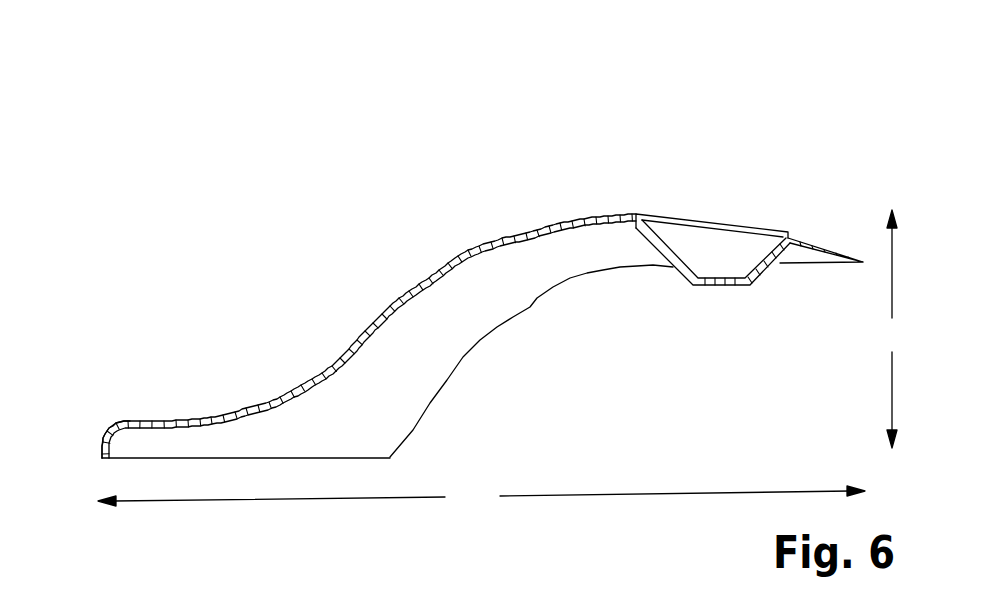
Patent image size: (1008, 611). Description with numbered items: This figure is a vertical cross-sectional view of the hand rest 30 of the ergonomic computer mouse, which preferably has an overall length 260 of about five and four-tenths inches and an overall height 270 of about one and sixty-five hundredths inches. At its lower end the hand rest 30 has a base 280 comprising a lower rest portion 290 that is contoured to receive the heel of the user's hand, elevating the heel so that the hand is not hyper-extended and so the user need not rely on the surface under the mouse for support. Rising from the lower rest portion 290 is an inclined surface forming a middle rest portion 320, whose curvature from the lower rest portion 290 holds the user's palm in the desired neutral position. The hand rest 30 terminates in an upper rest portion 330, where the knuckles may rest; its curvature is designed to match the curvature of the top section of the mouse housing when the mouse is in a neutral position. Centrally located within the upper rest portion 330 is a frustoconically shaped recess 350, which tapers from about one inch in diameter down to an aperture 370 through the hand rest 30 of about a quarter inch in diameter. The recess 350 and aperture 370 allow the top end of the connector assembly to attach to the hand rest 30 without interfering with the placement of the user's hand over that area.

The hand rest 30 is at (442, 240).
The overall length 260 is at (481, 496).
The overall height 270 is at (889, 329).
The base 280 is at (143, 448).
The lower rest portion 290 is at (212, 418).
The middle rest portion 320 is at (428, 283).
The upper rest portion 330 is at (610, 217).
The recess 350 is at (710, 257).
The aperture 370 is at (737, 277).